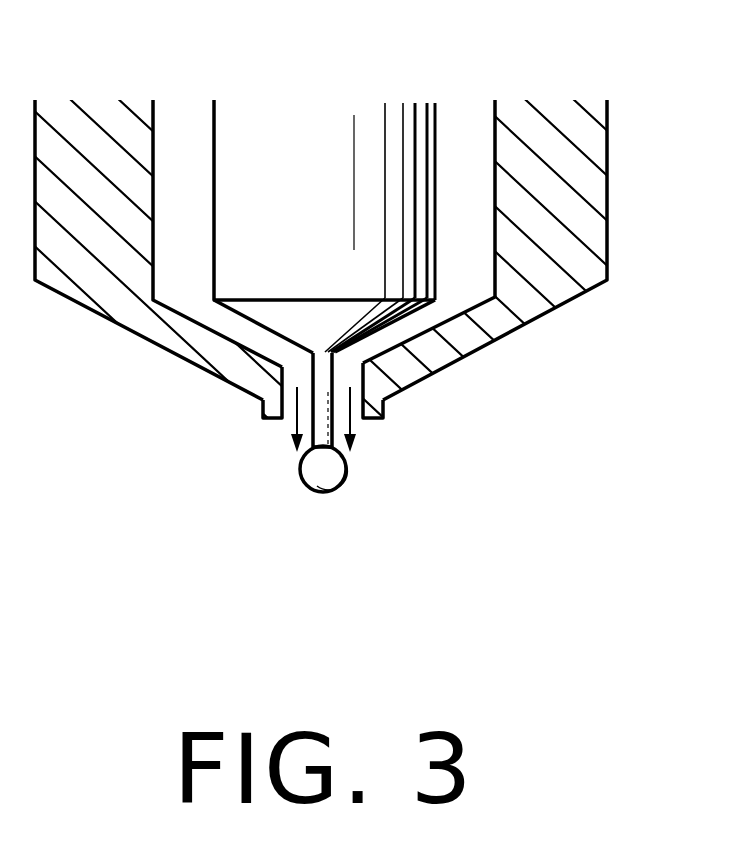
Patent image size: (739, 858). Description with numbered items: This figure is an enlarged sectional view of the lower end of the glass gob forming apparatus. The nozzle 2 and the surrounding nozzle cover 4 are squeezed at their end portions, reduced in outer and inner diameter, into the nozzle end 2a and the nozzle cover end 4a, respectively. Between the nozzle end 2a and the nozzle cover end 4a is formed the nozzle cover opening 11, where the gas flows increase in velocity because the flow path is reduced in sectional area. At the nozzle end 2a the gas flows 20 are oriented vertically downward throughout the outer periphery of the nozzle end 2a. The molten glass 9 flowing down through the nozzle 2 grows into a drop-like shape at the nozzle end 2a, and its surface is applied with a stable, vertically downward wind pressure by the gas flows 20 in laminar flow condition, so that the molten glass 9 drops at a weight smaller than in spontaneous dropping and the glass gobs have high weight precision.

The nozzle 2 is at (397, 143).
The nozzle end 2a is at (330, 413).
The nozzle cover 4 is at (582, 225).
The nozzle cover end 4a is at (262, 407).
The molten glass 9 is at (322, 491).
The nozzle cover opening 11 is at (350, 377).
The gas flows 20 is at (282, 424).